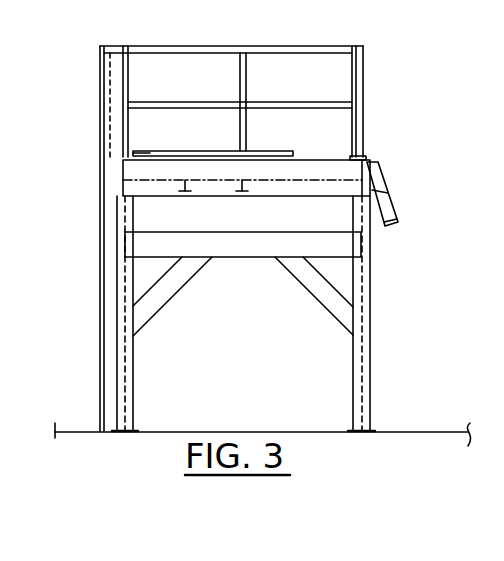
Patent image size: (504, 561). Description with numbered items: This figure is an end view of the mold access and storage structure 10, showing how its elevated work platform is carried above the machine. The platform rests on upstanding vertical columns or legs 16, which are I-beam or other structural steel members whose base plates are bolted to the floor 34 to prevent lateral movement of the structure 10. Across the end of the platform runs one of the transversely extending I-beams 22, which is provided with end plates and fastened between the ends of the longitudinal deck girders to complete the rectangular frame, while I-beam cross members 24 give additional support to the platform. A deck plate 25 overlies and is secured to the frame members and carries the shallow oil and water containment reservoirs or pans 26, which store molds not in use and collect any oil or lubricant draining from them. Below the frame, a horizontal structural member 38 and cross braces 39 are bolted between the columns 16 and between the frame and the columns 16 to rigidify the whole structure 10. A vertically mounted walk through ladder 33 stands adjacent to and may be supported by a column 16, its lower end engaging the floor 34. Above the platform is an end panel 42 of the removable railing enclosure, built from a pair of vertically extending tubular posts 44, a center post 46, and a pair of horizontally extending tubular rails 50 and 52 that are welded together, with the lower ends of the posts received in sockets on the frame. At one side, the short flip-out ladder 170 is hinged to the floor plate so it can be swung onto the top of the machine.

The mold access and storage structure 10 is at (269, 231).
The vertical columns or legs 16 is at (115, 367).
The transversely extending I-beams 22 is at (122, 171).
The I-beam cross members 24 is at (185, 163).
The deck plate 25 is at (128, 154).
The oil and water containment reservoirs or pans 26 is at (182, 153).
The walk through ladder 33 is at (102, 300).
The floor 34 is at (298, 432).
The horizontal structural member 38 is at (247, 253).
The cross braces 39 is at (178, 288).
The end panels 42 is at (232, 215).
The vertically extending tubular posts 44 is at (126, 77).
The center post 46 is at (277, 47).
The horizontally extending tubular rail 50 is at (203, 46).
The horizontally extending tubular rail 52 is at (180, 108).
The flip-out ladder 170 is at (398, 199).